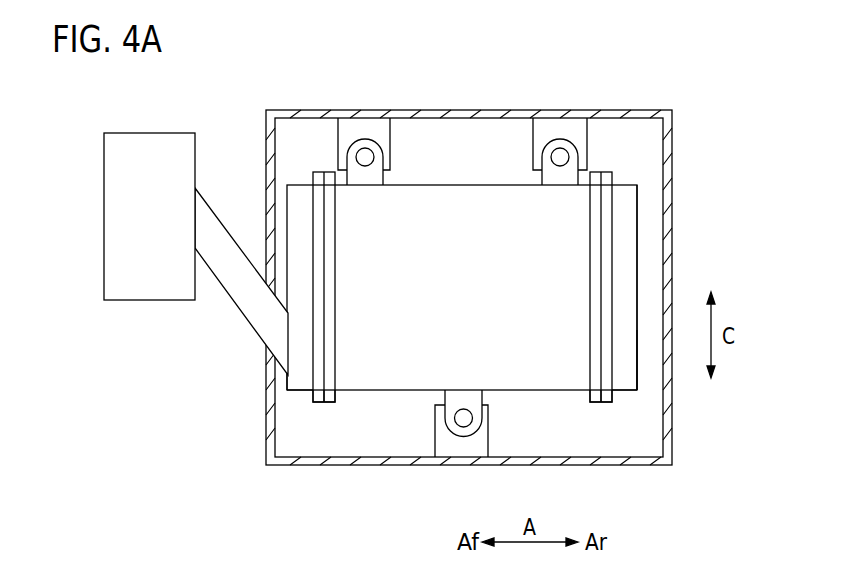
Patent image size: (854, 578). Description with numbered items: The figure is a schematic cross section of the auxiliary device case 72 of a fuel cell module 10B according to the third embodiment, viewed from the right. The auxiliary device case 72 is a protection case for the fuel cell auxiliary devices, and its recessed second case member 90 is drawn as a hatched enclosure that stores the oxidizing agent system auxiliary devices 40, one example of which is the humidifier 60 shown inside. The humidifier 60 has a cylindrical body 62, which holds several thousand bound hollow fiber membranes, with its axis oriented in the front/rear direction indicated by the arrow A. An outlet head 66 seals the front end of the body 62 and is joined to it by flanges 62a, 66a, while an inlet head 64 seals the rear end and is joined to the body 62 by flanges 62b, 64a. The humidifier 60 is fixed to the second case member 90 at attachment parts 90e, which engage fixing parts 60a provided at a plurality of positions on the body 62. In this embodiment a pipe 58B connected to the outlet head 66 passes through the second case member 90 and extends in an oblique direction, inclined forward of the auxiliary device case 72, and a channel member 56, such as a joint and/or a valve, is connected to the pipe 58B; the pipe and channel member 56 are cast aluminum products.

The fuel cell module 10B is at (290, 80).
The auxiliary device case 72 is at (634, 105).
The second case member 90 is at (666, 161).
The attachment parts 90e is at (358, 128).
The humidifier 60 is at (480, 289).
The fixing parts 60a is at (381, 160).
The body 62 is at (411, 368).
The flange 62a is at (331, 403).
The flange 62b is at (595, 403).
The inlet head 64 is at (622, 216).
The flange 64a is at (607, 403).
The outlet head 66 is at (305, 206).
The flange 66a is at (318, 403).
The oxidizing agent system auxiliary devices 40 is at (652, 268).
The channel member 56 is at (118, 206).
The pipe 58B is at (243, 298).